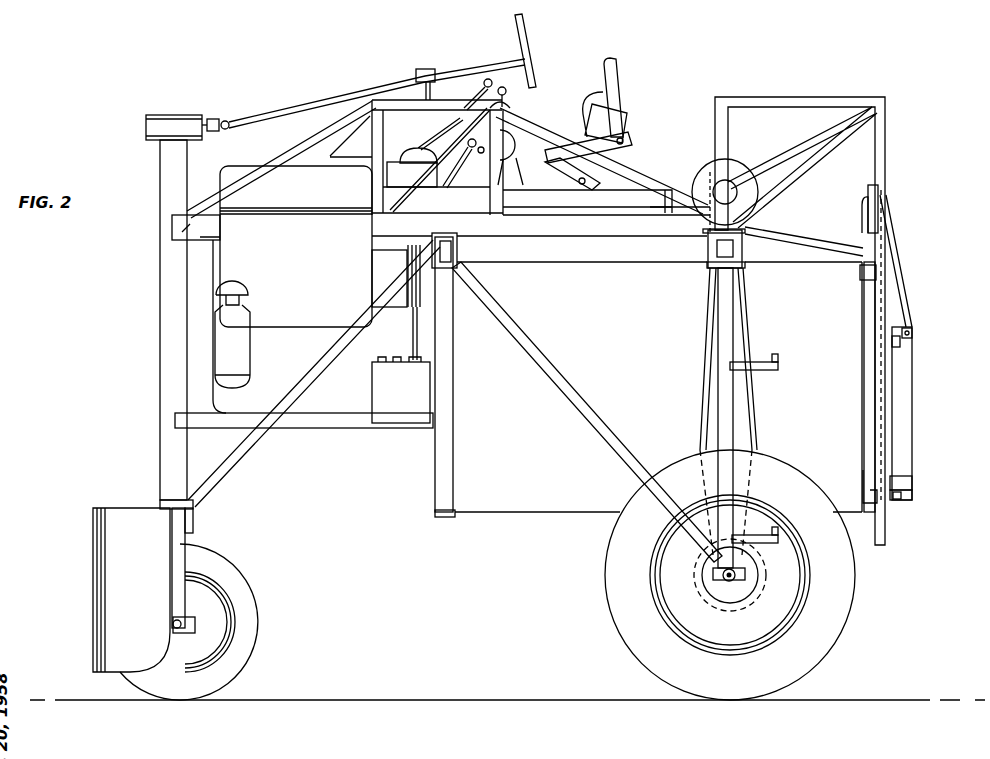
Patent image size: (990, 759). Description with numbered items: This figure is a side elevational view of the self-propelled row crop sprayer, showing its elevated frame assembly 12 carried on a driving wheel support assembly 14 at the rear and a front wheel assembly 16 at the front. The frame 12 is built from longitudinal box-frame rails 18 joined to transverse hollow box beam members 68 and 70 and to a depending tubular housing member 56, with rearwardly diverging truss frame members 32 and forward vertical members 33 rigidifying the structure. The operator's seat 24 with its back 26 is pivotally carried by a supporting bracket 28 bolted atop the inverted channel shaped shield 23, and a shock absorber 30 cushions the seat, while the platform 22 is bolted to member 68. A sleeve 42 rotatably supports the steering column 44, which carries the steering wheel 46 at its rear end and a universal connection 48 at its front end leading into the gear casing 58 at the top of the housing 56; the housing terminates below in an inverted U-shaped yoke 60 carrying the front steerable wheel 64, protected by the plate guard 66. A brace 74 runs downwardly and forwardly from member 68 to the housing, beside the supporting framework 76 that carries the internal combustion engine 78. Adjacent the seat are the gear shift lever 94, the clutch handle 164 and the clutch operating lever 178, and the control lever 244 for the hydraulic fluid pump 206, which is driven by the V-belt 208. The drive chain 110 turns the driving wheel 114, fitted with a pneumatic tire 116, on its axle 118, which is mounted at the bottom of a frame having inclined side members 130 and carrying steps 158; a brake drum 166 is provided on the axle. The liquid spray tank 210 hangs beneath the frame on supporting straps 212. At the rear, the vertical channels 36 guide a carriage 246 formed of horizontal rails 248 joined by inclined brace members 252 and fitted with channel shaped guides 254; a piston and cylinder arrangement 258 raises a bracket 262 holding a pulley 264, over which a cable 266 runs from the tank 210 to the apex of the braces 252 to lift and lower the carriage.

The elevated frame assembly 12 is at (660, 173).
The driving wheel support assembly 14 is at (607, 467).
The front wheel assembly 16 is at (143, 511).
The longitudinal box-frame rails 18 is at (626, 238).
The platform 22 is at (550, 208).
The channel shaped shield 23 is at (652, 212).
The operator's seat 24 is at (610, 126).
The seat back 26 is at (614, 71).
The supporting bracket 28 is at (577, 180).
The shock absorber 30 is at (605, 178).
The rearwardly diverging frame members 32 is at (340, 120).
The forward vertical members 33 is at (382, 180).
The vertical channels 36 is at (886, 146).
The sleeve 42 is at (430, 68).
The steering column 44 is at (366, 88).
The steering wheel 46 is at (536, 58).
The universal connection 48 is at (223, 119).
The tubular housing member 56 is at (165, 272).
The gear casing 58 is at (150, 128).
The inverted U-shaped yoke 60 is at (183, 556).
The front steerable wheel 64 is at (246, 604).
The plate guard 66 is at (100, 524).
The forward transverse box beam member 68 is at (458, 256).
The rear transverse box beam member 70 is at (742, 270).
The brace 74 is at (306, 382).
The supporting framework 76 is at (310, 428).
The prime mover 78 is at (347, 412).
The gear shift lever 94 is at (471, 91).
The drive chain 110 is at (749, 418).
The driving wheel 114 is at (800, 578).
The pneumatic tire 116 is at (826, 633).
The axle 118 is at (728, 582).
The inclined side members 130 is at (549, 373).
The steps 158 is at (780, 362).
The clutch handle 164 is at (501, 86).
The brake drum 166 is at (737, 165).
The clutch operating lever 178 is at (453, 133).
The hydraulic fluid pump 206 is at (380, 264).
The V-belt 208 is at (420, 335).
The liquid spray tank 210 is at (510, 513).
The supporting straps 212 is at (437, 466).
The control lever 244 is at (433, 181).
The carriage 246 is at (915, 361).
The horizontal rails 248 is at (904, 500).
The inclined brace members 252 is at (910, 484).
The channel shaped guides 254 is at (867, 495).
The piston and cylinder arrangement 258 is at (870, 326).
The bracket 262 is at (876, 196).
The pulley 264 is at (863, 210).
The cable 266 is at (858, 244).